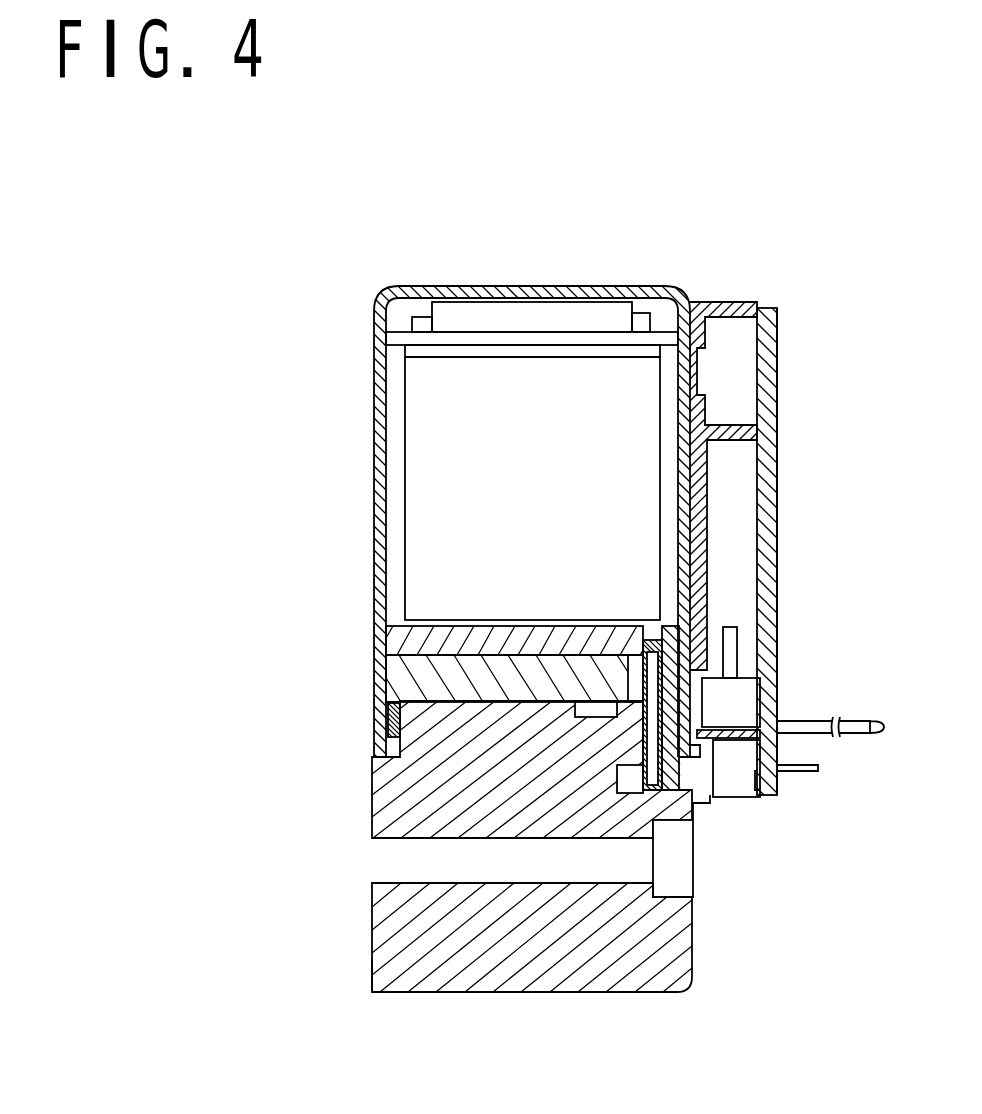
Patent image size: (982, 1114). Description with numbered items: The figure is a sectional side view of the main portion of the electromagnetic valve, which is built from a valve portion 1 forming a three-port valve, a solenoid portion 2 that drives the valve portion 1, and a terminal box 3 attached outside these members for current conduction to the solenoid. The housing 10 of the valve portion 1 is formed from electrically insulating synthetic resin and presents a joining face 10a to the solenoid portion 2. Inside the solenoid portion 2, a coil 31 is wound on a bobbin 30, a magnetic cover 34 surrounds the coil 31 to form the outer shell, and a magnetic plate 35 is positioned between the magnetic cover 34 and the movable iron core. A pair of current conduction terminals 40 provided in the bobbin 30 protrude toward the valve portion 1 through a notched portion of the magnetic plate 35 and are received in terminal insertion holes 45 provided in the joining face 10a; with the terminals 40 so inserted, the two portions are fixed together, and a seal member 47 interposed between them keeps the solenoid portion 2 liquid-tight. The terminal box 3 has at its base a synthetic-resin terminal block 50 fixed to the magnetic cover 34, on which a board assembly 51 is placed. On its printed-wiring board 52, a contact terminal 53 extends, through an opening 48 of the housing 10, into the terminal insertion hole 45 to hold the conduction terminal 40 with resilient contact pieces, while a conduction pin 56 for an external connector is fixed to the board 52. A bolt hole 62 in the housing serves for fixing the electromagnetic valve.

The valve portion 1 is at (315, 1002).
The solenoid portion 2 is at (491, 465).
The terminal box 3 is at (787, 508).
The housing 10 is at (533, 978).
The joining face 10a is at (390, 685).
The bobbin 30 is at (398, 641).
The coil 31 is at (420, 452).
The magnetic cover 34 is at (510, 286).
The magnetic plate 35 is at (390, 668).
The current conduction terminal 40 is at (637, 758).
The terminal insertion hole 45 is at (647, 732).
The seal member 47 is at (392, 720).
The opening 48 is at (683, 785).
The terminal block 50 is at (717, 302).
The board assembly 51 is at (787, 362).
The board 52 is at (767, 413).
The contact terminal 53 is at (706, 800).
The conduction pin 56 is at (812, 720).
The bolt hole 62 is at (410, 882).